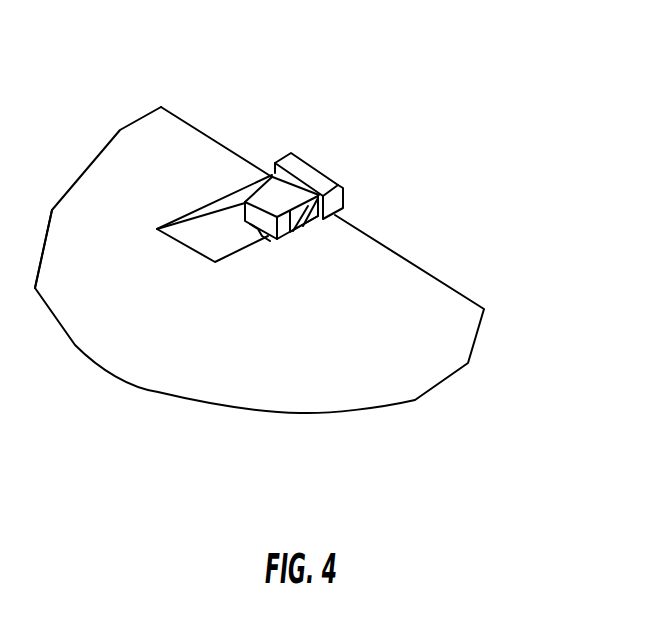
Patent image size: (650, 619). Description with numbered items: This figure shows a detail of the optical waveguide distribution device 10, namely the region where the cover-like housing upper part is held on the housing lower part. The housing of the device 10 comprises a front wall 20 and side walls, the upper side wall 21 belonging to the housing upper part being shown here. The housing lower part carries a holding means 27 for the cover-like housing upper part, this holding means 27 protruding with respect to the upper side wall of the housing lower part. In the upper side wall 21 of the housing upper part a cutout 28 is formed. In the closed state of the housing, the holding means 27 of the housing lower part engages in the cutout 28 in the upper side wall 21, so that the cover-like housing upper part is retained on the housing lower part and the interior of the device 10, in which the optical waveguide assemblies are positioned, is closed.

The optical waveguide distribution device 10 is at (438, 192).
The front wall 20 is at (107, 325).
The side wall 21 is at (160, 170).
The holding means 27 is at (325, 168).
The cutout 28 is at (245, 205).